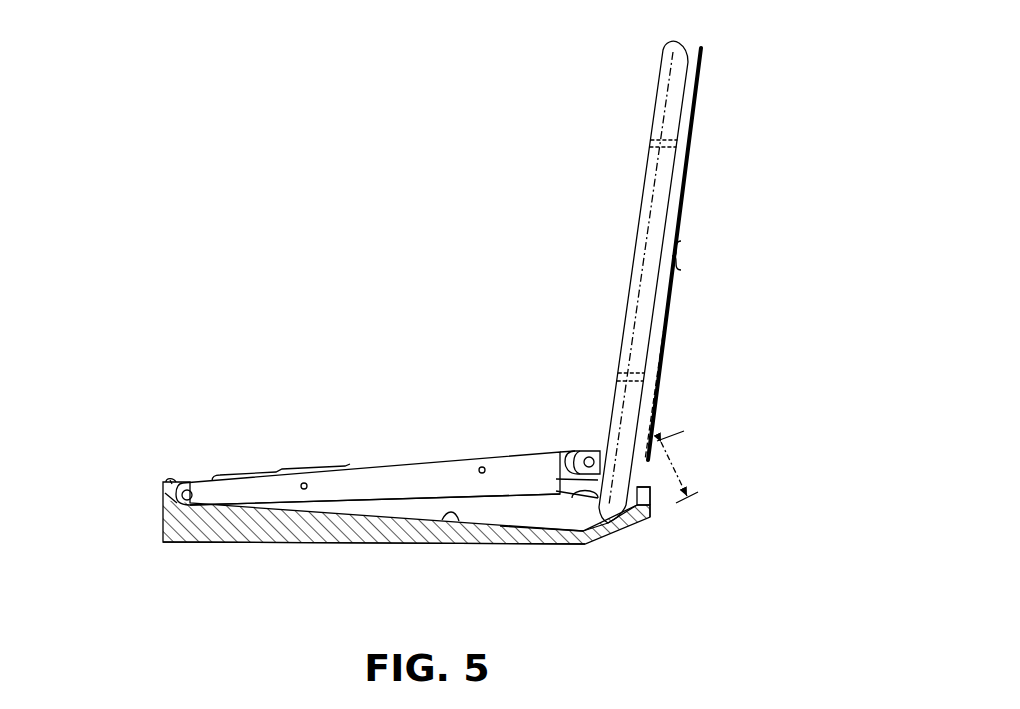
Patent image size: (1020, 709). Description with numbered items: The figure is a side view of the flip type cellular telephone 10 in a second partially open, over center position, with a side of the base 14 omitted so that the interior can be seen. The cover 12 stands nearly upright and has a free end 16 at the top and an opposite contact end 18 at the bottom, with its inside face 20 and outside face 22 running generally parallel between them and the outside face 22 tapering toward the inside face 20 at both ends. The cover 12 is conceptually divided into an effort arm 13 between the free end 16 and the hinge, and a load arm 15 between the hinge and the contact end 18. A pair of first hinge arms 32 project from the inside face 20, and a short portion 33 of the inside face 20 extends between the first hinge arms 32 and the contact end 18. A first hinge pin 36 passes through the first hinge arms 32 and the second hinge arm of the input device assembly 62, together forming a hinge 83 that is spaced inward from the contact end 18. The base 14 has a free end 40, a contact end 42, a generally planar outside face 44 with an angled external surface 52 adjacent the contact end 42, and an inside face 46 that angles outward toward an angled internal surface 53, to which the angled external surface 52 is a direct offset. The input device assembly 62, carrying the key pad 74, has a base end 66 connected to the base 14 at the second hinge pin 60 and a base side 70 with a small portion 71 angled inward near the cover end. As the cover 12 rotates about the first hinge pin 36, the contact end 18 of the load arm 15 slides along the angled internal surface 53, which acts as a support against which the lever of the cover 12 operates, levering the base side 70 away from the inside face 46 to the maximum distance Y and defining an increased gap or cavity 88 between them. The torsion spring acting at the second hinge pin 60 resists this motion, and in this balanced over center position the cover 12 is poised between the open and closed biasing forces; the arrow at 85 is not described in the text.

The cellular telephone 10 is at (430, 291).
The cover 12 is at (662, 191).
The effort arm 13 is at (692, 253).
The base 14 is at (240, 527).
The load arm 15 is at (651, 502).
The free end 16 is at (671, 42).
The contact end 18 is at (603, 529).
The inside face 20 is at (634, 253).
The outside face 22 is at (656, 306).
The first hinge arms 32 is at (552, 472).
The short portion 33 is at (548, 470).
The first hinge pin 36 is at (589, 456).
The free end 40 is at (163, 531).
The contact end 42 is at (652, 520).
The outside face 44 is at (328, 528).
The inside face 46 is at (457, 531).
The angled external surface 52 is at (623, 534).
The angled internal surface 53 is at (648, 508).
The second hinge pin 60 is at (180, 490).
The input device assembly 62 is at (241, 487).
The base end 66 is at (172, 497).
The base side 70 is at (326, 500).
The small portion 71 is at (558, 482).
The key pad 74 is at (293, 469).
The hinge 83 is at (574, 442).
The pivot axis 85 is at (153, 466).
The gap or cavity 88 is at (523, 513).
The distance Y is at (678, 467).